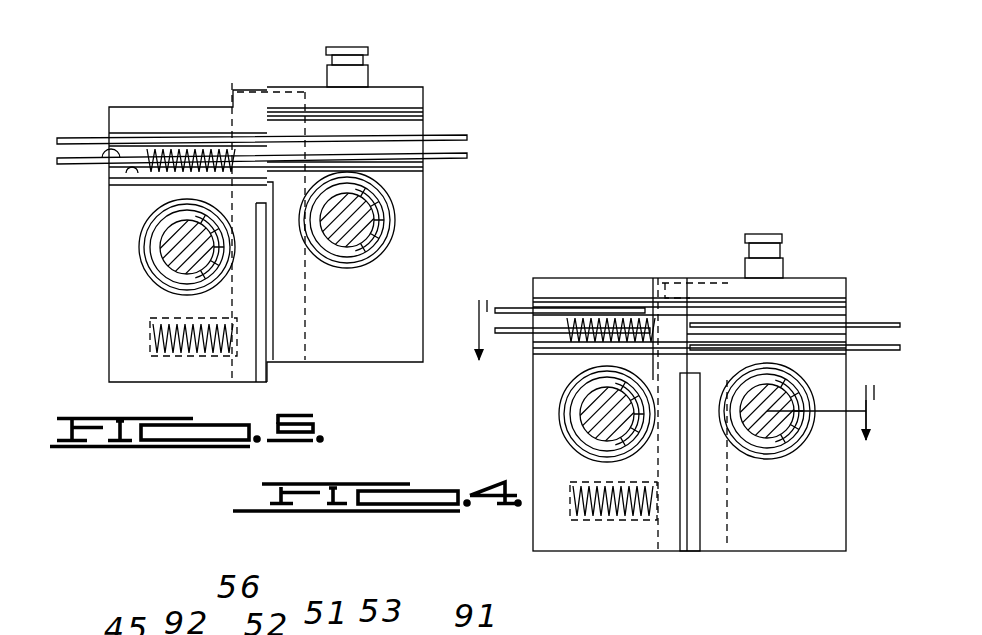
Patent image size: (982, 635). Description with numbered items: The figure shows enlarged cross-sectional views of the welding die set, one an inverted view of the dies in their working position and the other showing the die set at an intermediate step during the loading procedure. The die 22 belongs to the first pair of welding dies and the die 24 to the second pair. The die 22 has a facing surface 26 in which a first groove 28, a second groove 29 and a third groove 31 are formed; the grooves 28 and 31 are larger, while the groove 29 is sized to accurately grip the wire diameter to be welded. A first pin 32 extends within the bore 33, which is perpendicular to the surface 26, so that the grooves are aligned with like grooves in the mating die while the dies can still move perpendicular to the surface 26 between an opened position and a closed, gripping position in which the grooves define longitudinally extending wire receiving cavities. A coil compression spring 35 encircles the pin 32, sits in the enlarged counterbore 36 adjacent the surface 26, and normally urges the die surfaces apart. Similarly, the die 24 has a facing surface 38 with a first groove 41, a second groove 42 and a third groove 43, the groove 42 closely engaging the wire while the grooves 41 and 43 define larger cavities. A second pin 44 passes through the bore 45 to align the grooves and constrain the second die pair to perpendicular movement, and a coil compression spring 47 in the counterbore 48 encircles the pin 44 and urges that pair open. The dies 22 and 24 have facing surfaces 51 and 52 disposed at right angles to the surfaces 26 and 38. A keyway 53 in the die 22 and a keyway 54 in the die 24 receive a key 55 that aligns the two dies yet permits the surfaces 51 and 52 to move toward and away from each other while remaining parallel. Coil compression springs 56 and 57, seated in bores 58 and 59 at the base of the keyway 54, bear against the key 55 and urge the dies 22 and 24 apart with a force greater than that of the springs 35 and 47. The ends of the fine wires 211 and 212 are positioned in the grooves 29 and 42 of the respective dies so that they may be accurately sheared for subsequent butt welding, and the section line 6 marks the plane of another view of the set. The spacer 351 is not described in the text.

In FIG. 4, the section line 6- 6 is at (674, 370).
In FIG. 5, the welding die 22 is at (397, 84).
In FIG. 4, the welding die 22 is at (827, 272).
In FIG. 5, the welding die 24 is at (188, 104).
In FIG. 4, the welding die 24 is at (640, 275).
In FIG. 5, the facing surface 26 is at (403, 234).
In FIG. 4, the facing surface 26 is at (833, 515).
In FIG. 5, the first groove 28 is at (400, 123).
In FIG. 4, the first groove 28 is at (845, 297).
In FIG. 5, the second groove 29 is at (425, 108).
In FIG. 4, the second groove 29 is at (850, 318).
In FIG. 5, the third groove 31 is at (423, 167).
In FIG. 4, the third groove 31 is at (830, 333).
In FIG. 5, the first pin 32 is at (362, 273).
In FIG. 4, the first pin 32 is at (785, 440).
In FIG. 5, the bore 33 is at (357, 211).
In FIG. 4, the bore 33 is at (790, 393).
In FIG. 5, the coil compression spring 35 is at (372, 249).
In FIG. 4, the coil compression spring 35 is at (782, 432).
In FIG. 5, the counterbore 36 is at (345, 270).
In FIG. 4, the counterbore 36 is at (772, 460).
In FIG. 5, the facing surface 38 is at (148, 333).
In FIG. 4, the facing surface 38 is at (530, 520).
In FIG. 5, the first groove 41 is at (117, 133).
In FIG. 4, the first groove 41 is at (550, 310).
In FIG. 5, the second groove 42 is at (110, 160).
In FIG. 4, the second groove 42 is at (547, 343).
In FIG. 5, the third groove 43 is at (135, 190).
In FIG. 4, the third groove 43 is at (553, 343).
In FIG. 5, the second pin 44 is at (172, 256).
In FIG. 4, the second pin 44 is at (600, 400).
In FIG. 5, the bore 45 is at (164, 241).
In FIG. 4, the bore 45 is at (590, 427).
In FIG. 5, the coil compression spring 47 is at (225, 278).
In FIG. 4, the coil compression spring 47 is at (600, 445).
In FIG. 5, the counterbore 48 is at (172, 180).
In FIG. 4, the counterbore 48 is at (590, 417).
In FIG. 5, the facing surface 51 is at (248, 108).
In FIG. 4, the facing surface 51 is at (703, 340).
In FIG. 5, the facing surface 52 is at (270, 373).
In FIG. 4, the facing surface 52 is at (735, 300).
In FIG. 5, the keyway 53 is at (344, 47).
In FIG. 4, the keyway 53 is at (725, 517).
In FIG. 5, the keyway 54 is at (232, 150).
In FIG. 4, the keyway 54 is at (650, 523).
In FIG. 5, the key 55 is at (307, 348).
In FIG. 4, the key 55 is at (725, 548).
In FIG. 5, the coil compression spring 56 is at (160, 148).
In FIG. 4, the coil compression spring 56 is at (672, 270).
In FIG. 5, the coil compression spring 57 is at (112, 345).
In FIG. 4, the coil compression spring 57 is at (575, 525).
In FIG. 5, the bore 58 is at (195, 135).
In FIG. 4, the bore 58 is at (685, 285).
In FIG. 5, the bore 59 is at (180, 337).
In FIG. 4, the bore 59 is at (613, 520).
In FIG. 5, the wire 211 is at (465, 137).
In FIG. 4, the wire 211 is at (500, 310).
In FIG. 5, the wire 212 is at (463, 157).
In FIG. 4, the wire 212 is at (508, 326).
In FIG. 5, the spacer plate 351 is at (262, 328).
In FIG. 4, the spacer plate 351 is at (690, 551).